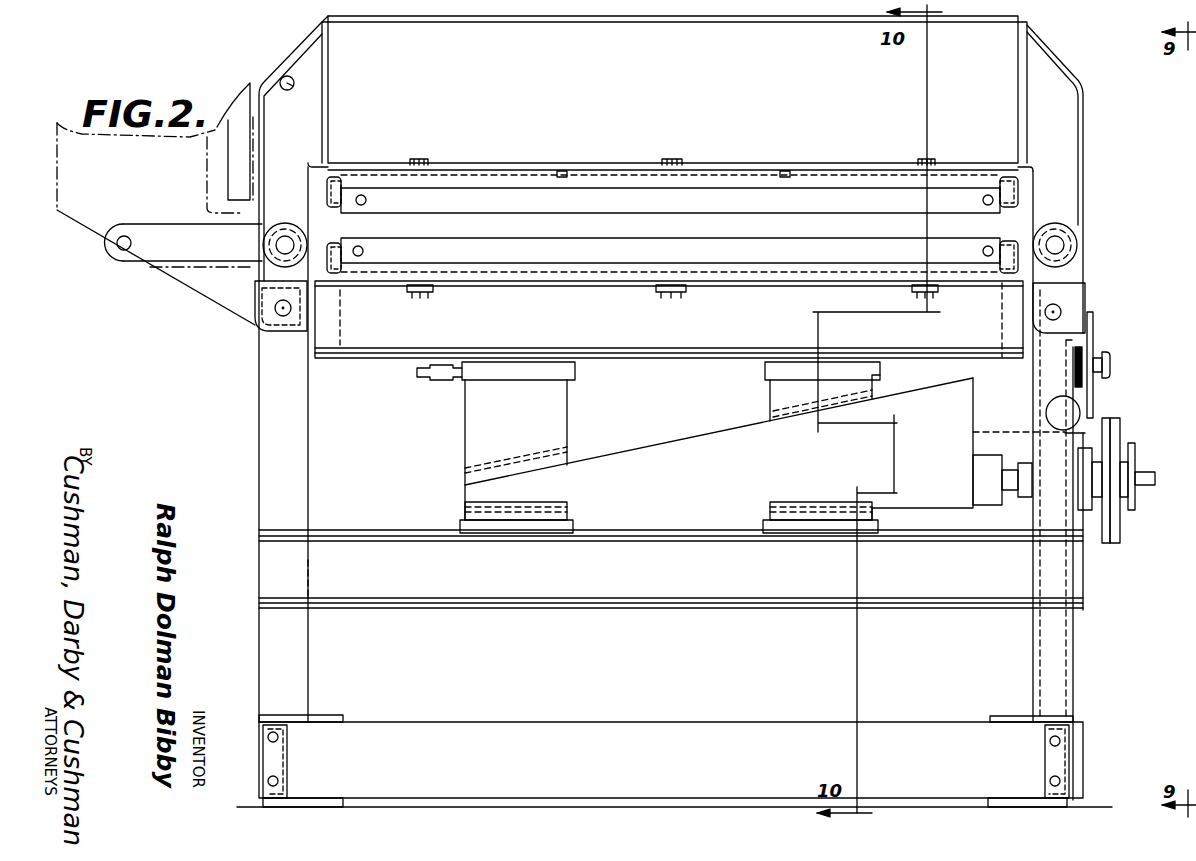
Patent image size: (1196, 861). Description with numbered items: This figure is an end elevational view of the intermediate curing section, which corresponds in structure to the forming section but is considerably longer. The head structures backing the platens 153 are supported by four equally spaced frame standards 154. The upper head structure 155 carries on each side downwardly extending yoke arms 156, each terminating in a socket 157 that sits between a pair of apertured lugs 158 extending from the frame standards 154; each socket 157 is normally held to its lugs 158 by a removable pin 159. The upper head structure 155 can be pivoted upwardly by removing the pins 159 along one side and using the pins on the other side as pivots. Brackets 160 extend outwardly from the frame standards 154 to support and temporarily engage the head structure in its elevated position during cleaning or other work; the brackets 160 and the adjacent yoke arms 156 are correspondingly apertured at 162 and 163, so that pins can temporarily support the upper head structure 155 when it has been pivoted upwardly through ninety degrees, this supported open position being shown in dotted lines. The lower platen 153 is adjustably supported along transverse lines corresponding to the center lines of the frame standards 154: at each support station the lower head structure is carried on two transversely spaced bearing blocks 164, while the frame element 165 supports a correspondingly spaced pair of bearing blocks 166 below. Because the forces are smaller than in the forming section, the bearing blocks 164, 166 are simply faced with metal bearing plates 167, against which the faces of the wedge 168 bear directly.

The platens 153 is at (545, 243).
The frame standards 154 is at (303, 481).
The upper head structure 155 is at (663, 101).
The yoke arms 156 is at (1070, 180).
The socket 157 is at (1078, 267).
The apertured lugs 158 is at (1066, 248).
The removable pin 159 is at (276, 246).
The brackets 160 is at (228, 310).
The aperture 162 is at (125, 252).
The aperture 163 is at (290, 76).
The bearing blocks 164 is at (558, 422).
The frame element 165 is at (684, 676).
The bearing blocks 166 is at (567, 515).
The metal bearing plates 167 is at (873, 394).
The wedge 168 is at (722, 478).